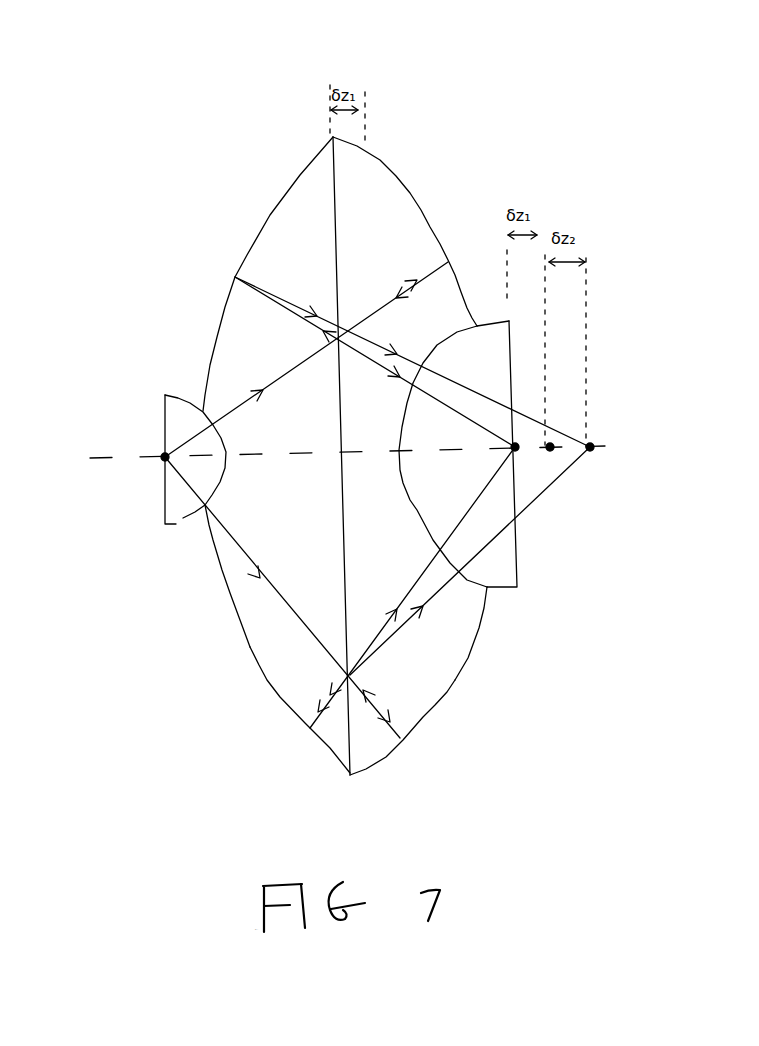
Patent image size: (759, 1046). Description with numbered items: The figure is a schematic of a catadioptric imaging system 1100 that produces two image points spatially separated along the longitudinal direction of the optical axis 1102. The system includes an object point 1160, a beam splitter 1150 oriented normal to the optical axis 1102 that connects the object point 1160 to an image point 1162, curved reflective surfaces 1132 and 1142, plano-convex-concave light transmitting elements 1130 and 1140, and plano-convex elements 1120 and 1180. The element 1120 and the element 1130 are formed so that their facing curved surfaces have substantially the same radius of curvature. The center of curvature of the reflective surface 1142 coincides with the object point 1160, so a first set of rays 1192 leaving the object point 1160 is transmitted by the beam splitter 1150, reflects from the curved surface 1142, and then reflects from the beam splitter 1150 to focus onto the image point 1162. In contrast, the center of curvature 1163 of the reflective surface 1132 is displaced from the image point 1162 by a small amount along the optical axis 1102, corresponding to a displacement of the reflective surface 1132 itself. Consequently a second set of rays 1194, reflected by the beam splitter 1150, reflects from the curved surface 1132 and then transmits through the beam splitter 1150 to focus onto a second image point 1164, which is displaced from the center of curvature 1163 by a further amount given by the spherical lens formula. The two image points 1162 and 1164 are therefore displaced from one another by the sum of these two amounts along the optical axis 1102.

The catadioptric imaging system 1100 is at (484, 98).
The optical axis 1102 is at (93, 460).
The plano-convex element 1120 is at (184, 520).
The plano-convex-concave light transmitting element 1130 is at (238, 624).
The curved reflective surface 1132 is at (257, 668).
The plano-convex-concave light transmitting element 1140 is at (428, 680).
The curved reflective surface 1142 is at (470, 637).
The beam splitter 1150 is at (360, 722).
The object point 1160 is at (160, 452).
The image point 1162 is at (523, 457).
The center of curvature 1163 is at (551, 441).
The image point 1164 is at (600, 450).
The plano-convex element 1180 is at (507, 557).
The first set of rays 1192 is at (376, 365).
The second set of rays 1194 is at (383, 343).